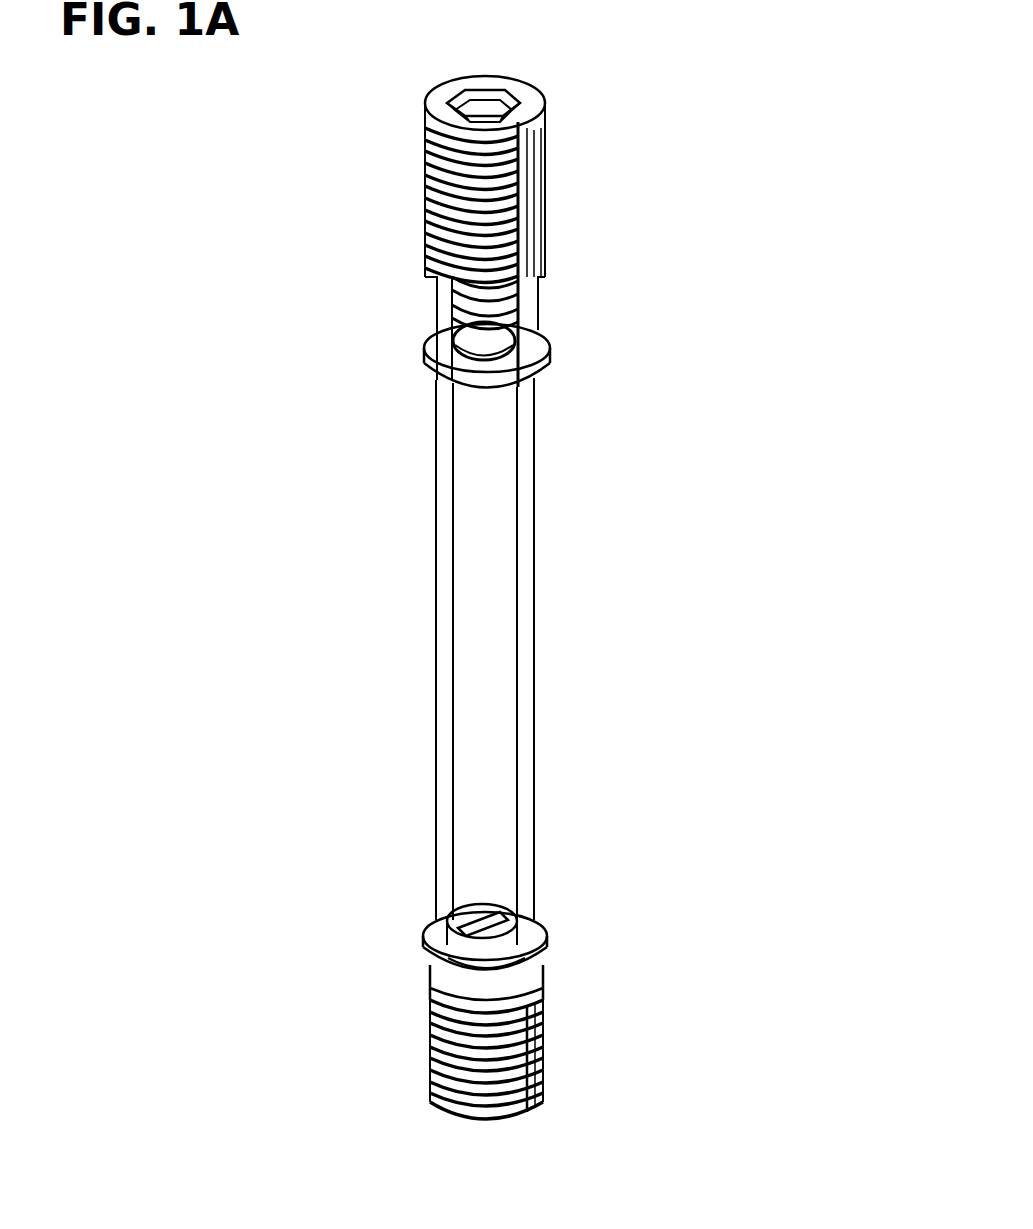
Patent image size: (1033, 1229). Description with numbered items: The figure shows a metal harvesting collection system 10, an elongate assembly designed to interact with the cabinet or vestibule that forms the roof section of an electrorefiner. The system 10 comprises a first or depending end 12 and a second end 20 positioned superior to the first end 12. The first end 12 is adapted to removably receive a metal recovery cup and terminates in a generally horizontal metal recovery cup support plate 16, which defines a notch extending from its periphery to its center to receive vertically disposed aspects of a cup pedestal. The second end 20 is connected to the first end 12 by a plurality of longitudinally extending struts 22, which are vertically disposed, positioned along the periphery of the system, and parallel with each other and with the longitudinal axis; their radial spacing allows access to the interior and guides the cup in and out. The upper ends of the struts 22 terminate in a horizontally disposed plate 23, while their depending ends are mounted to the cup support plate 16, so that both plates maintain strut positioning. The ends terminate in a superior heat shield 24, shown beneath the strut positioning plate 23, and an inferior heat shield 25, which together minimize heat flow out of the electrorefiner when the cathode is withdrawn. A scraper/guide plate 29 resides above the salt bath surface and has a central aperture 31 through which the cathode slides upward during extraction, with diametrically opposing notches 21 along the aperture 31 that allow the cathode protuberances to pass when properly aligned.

The metal harvesting collection system 10 is at (305, 450).
The first end 12 is at (430, 923).
The metal recovery cup support plate 16 is at (502, 927).
The second end 20 is at (530, 192).
The notches 21 is at (507, 358).
The struts 22 is at (525, 535).
The plate 23 is at (535, 105).
The superior heat shield 24 is at (433, 218).
The inferior heat shield 25 is at (442, 1020).
The scraper/guide plate 29 is at (443, 357).
The central aperture 31 is at (492, 342).